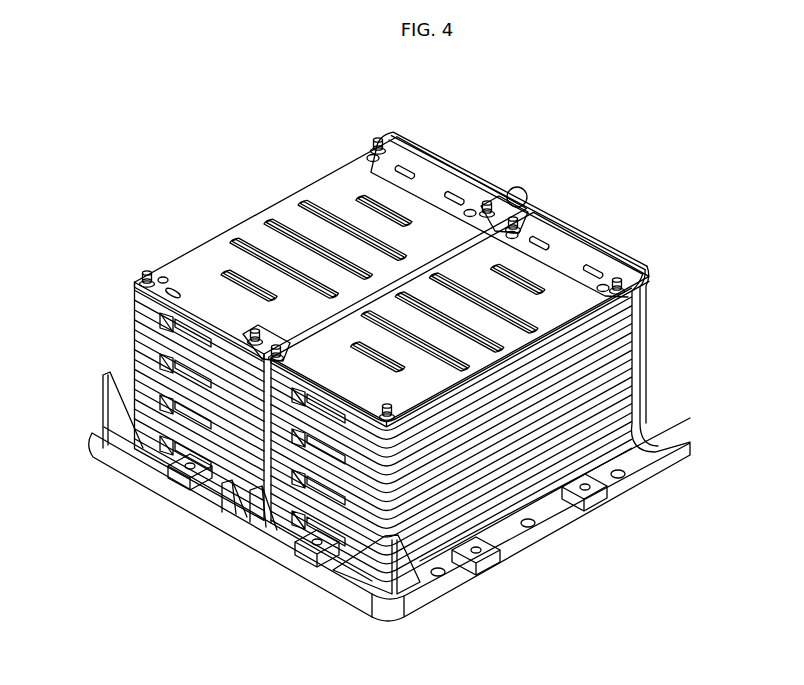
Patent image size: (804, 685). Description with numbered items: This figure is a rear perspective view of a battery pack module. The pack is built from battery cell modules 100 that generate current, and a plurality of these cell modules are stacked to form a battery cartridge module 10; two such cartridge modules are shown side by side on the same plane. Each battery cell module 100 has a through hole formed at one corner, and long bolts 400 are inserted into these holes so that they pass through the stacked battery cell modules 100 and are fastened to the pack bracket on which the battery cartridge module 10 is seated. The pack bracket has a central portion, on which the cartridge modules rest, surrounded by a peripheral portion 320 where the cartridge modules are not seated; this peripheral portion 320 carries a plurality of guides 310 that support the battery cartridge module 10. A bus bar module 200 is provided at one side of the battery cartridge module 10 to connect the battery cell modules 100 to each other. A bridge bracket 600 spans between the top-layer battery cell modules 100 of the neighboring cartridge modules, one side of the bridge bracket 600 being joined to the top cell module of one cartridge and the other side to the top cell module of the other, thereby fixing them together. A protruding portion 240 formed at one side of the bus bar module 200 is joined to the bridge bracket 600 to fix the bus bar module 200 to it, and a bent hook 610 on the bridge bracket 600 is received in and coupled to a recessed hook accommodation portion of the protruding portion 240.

The battery cartridge module 10 is at (415, 359).
The battery cell module 100 is at (268, 215).
The bus bar module 200 is at (597, 235).
The protruding portion 240 is at (528, 193).
The guide 310 is at (108, 408).
The peripheral portion 320 is at (510, 538).
The long bolt 400 is at (376, 138).
The bridge bracket 600 is at (503, 210).
The hook 610 is at (135, 323).